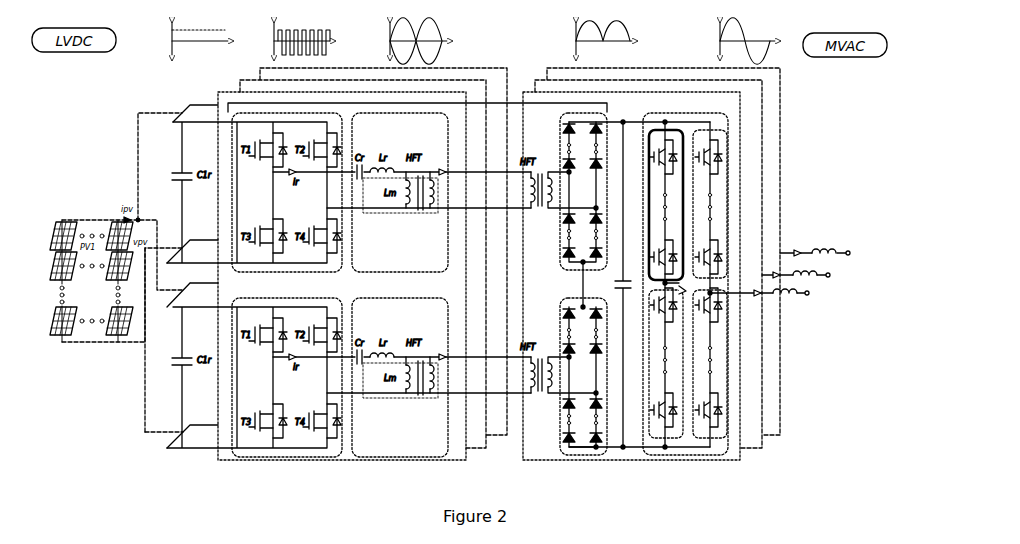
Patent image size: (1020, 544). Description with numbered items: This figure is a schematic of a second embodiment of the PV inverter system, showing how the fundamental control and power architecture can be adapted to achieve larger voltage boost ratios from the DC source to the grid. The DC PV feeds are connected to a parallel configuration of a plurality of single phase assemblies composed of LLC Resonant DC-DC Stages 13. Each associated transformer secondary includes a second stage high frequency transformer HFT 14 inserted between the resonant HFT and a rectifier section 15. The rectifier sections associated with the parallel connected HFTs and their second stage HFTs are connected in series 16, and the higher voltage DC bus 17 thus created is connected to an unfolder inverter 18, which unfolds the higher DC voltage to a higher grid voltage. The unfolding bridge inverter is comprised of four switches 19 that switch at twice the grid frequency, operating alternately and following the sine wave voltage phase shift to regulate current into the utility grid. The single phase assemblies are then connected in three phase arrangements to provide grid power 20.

The LLC Resonant DC-DC Stages 13 is at (417, 99).
The second stage high frequency transformer HFT 14 is at (523, 164).
The rectifier section 15 is at (558, 139).
The series connection 16 is at (577, 282).
The higher voltage DC bus 17 is at (623, 118).
The unfolder inverter 18 is at (680, 112).
The switches 19 is at (729, 174).
The grid power 20 is at (844, 297).